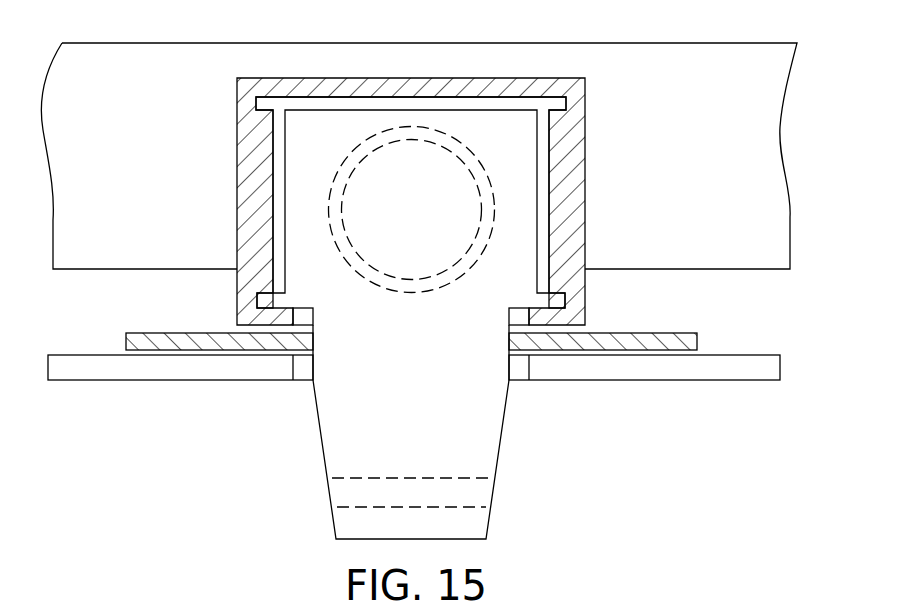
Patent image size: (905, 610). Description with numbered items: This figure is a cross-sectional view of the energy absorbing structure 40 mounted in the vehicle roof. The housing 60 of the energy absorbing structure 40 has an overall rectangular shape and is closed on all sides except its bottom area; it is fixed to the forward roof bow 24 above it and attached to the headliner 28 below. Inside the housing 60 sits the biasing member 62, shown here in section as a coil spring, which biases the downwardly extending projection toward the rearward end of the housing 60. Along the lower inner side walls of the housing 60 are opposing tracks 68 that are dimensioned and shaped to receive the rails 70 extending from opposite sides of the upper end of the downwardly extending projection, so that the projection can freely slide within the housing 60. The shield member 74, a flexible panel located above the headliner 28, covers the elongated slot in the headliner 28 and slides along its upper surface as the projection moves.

The forward roof bow 24 is at (718, 43).
The headliner 28 is at (720, 368).
The energy absorbing structure 40 is at (350, 70).
The housing 60 is at (493, 90).
The biasing member 62 is at (426, 292).
The tracks 68 is at (278, 312).
The rails 70 is at (262, 292).
The shield member 74 is at (654, 335).